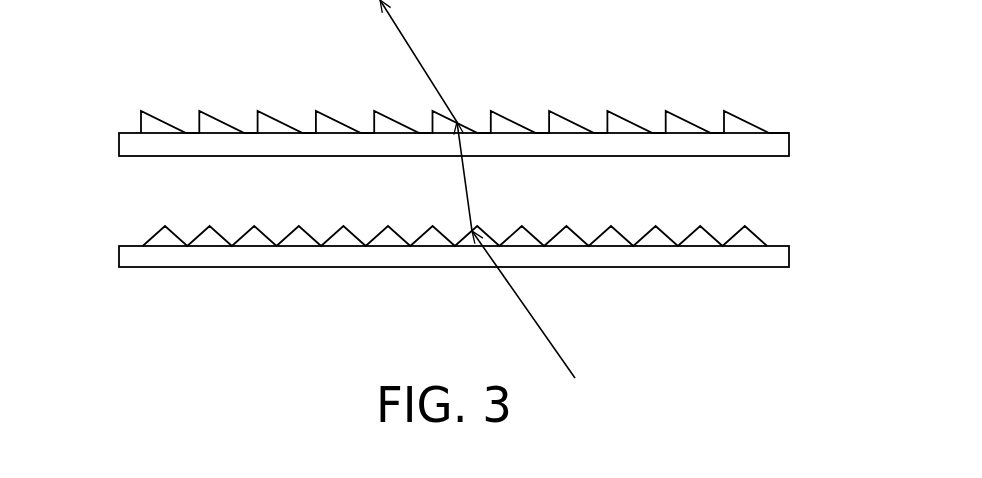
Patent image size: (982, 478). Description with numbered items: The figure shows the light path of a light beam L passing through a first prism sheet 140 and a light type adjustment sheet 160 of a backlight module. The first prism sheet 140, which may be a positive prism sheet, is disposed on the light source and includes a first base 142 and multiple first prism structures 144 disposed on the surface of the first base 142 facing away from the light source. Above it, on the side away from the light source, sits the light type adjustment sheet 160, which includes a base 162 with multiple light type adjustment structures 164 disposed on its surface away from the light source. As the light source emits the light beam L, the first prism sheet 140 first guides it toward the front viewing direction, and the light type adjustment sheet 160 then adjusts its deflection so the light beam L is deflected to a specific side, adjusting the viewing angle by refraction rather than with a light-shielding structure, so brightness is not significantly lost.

The light type adjustment sheet 160 is at (508, 131).
The base 162 is at (757, 139).
The light type adjustment structures 164 is at (745, 123).
The first prism sheet 140 is at (508, 247).
The first base 142 is at (757, 255).
The first prism structures 144 is at (748, 239).
The light beam L is at (540, 331).